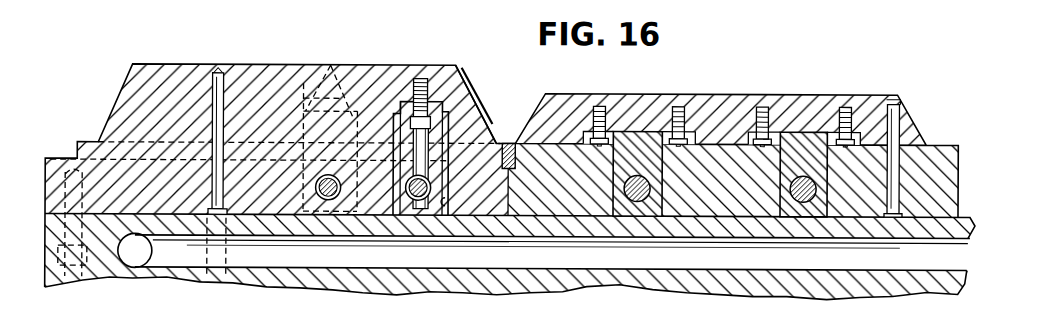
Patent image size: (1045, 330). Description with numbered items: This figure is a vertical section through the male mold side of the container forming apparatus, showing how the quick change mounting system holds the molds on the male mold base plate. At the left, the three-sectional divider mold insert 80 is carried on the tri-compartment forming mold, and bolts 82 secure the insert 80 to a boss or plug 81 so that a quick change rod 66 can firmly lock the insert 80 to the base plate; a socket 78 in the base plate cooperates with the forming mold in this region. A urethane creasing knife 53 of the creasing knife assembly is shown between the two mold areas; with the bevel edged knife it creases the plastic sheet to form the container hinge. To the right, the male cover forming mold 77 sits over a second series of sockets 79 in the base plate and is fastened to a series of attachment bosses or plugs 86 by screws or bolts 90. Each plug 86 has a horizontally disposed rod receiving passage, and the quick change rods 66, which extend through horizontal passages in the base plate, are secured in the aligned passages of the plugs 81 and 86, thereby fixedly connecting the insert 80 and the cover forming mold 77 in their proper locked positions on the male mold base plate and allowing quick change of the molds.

The urethane creasing knife 53 is at (513, 141).
The quick change rod 66 is at (338, 196).
The male cover forming mold 77 is at (736, 118).
The socket 78 is at (442, 204).
The socket 79 is at (652, 193).
The three-sectional divider mold insert 80 is at (388, 86).
The boss or plug 81 is at (441, 118).
The bolt 82 is at (424, 93).
The attachment boss or plug 86 is at (643, 135).
The screw or bolt 90 is at (597, 103).